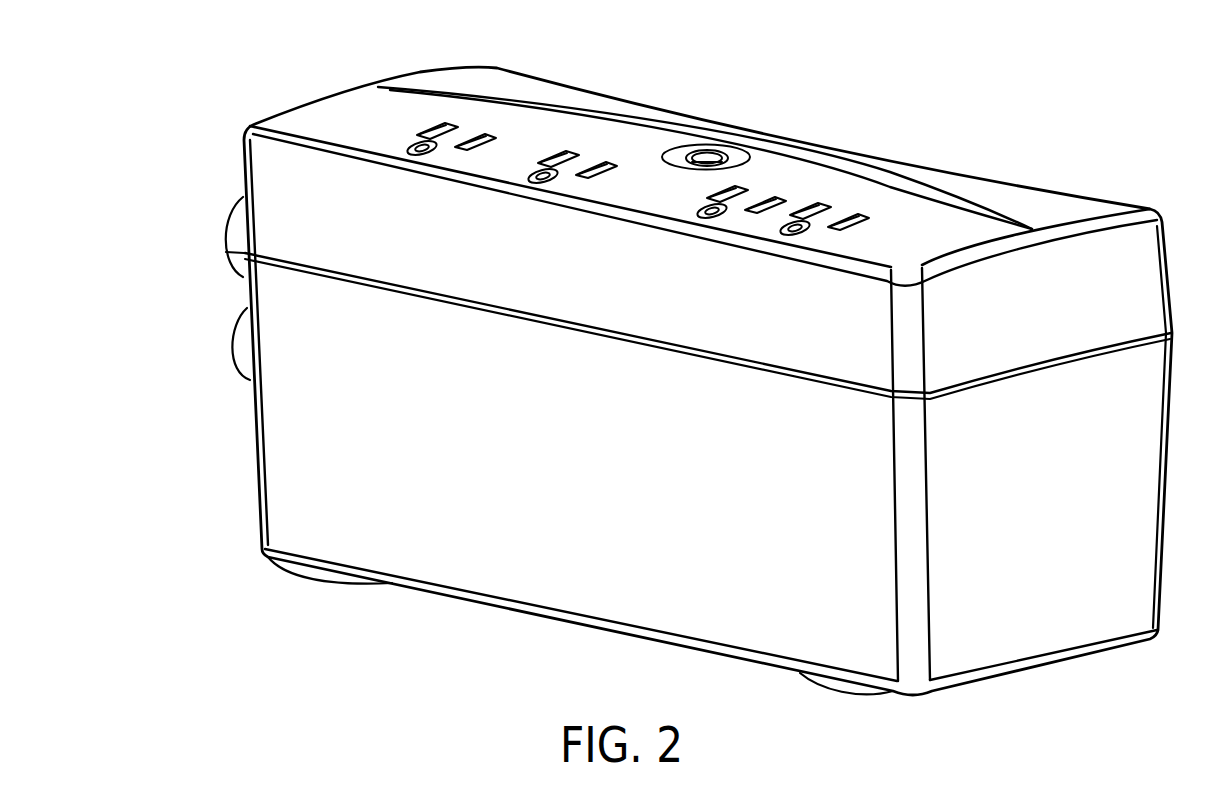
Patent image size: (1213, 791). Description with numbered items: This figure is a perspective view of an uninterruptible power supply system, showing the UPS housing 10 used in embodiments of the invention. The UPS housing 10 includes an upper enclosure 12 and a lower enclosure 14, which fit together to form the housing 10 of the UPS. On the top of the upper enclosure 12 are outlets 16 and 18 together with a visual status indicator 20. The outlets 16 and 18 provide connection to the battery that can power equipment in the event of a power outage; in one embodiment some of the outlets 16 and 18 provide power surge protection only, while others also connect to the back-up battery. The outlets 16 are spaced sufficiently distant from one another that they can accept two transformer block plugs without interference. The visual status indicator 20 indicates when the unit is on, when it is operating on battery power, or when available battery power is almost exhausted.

The UPS housing 10 is at (1080, 83).
The upper enclosure 12 is at (313, 127).
The lower enclosure 14 is at (303, 464).
The outlets 16 is at (497, 136).
The outlets 18 is at (780, 197).
The visual status indicator 20 is at (700, 157).